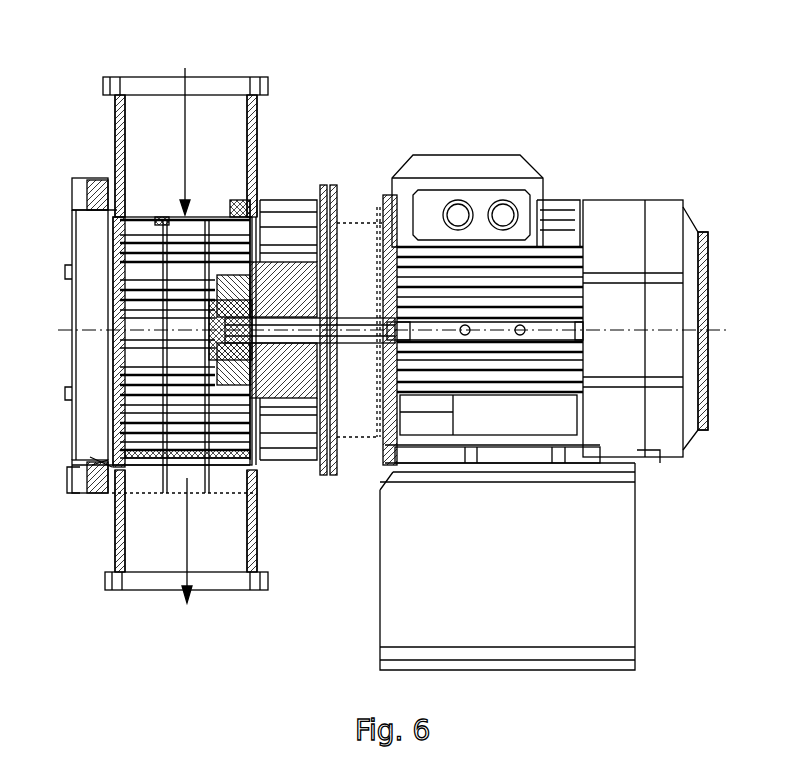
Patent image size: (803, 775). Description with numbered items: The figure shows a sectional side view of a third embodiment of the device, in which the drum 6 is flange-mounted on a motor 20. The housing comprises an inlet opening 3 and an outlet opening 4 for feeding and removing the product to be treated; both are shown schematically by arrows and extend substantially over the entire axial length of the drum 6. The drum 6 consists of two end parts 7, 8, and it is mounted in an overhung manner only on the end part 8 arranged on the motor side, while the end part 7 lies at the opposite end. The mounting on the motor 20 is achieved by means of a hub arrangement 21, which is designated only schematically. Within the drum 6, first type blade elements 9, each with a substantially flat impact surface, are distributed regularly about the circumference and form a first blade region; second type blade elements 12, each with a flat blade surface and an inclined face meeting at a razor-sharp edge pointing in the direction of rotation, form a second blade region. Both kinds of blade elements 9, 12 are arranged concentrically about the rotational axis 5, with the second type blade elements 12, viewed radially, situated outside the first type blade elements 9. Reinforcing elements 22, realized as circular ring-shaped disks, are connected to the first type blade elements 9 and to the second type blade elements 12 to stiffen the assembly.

The inlet opening 3 is at (198, 141).
The outlet opening 4 is at (199, 540).
The rotational axis 5 is at (343, 330).
The drum 6 is at (155, 465).
The end part 7 is at (120, 260).
The end part 8 is at (320, 187).
The first type blade elements 9 is at (182, 368).
The second type blade elements 12 is at (193, 378).
The motor 20 is at (618, 223).
The hub arrangement 21 is at (238, 368).
The reinforcing elements 22 is at (163, 217).